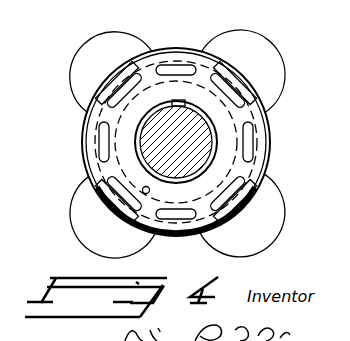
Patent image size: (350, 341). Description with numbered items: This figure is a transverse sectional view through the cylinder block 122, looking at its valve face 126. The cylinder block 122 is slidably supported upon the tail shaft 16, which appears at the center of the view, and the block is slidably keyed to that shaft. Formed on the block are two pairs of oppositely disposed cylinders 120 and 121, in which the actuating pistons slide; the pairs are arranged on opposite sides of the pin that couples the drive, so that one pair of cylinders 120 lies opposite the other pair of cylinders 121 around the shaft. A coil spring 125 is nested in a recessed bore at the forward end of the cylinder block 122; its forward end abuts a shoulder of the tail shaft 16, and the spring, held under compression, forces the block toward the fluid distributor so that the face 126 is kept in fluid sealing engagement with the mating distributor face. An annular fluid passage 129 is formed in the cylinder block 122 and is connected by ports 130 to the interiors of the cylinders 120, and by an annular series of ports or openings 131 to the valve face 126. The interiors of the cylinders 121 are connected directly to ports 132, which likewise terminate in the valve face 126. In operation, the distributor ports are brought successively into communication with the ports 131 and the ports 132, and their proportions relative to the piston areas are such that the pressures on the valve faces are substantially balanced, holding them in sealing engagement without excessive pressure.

The tail shaft 16 is at (172, 140).
The cylinders 120 is at (72, 58).
The cylinders 121 is at (88, 222).
The cylinder block 122 is at (269, 136).
The coil spring 125 is at (177, 100).
The face 126 is at (88, 113).
The annular fluid passage 129 is at (158, 62).
The ports 130 is at (102, 82).
The ports or openings 131 is at (140, 190).
The ports 132 is at (150, 190).